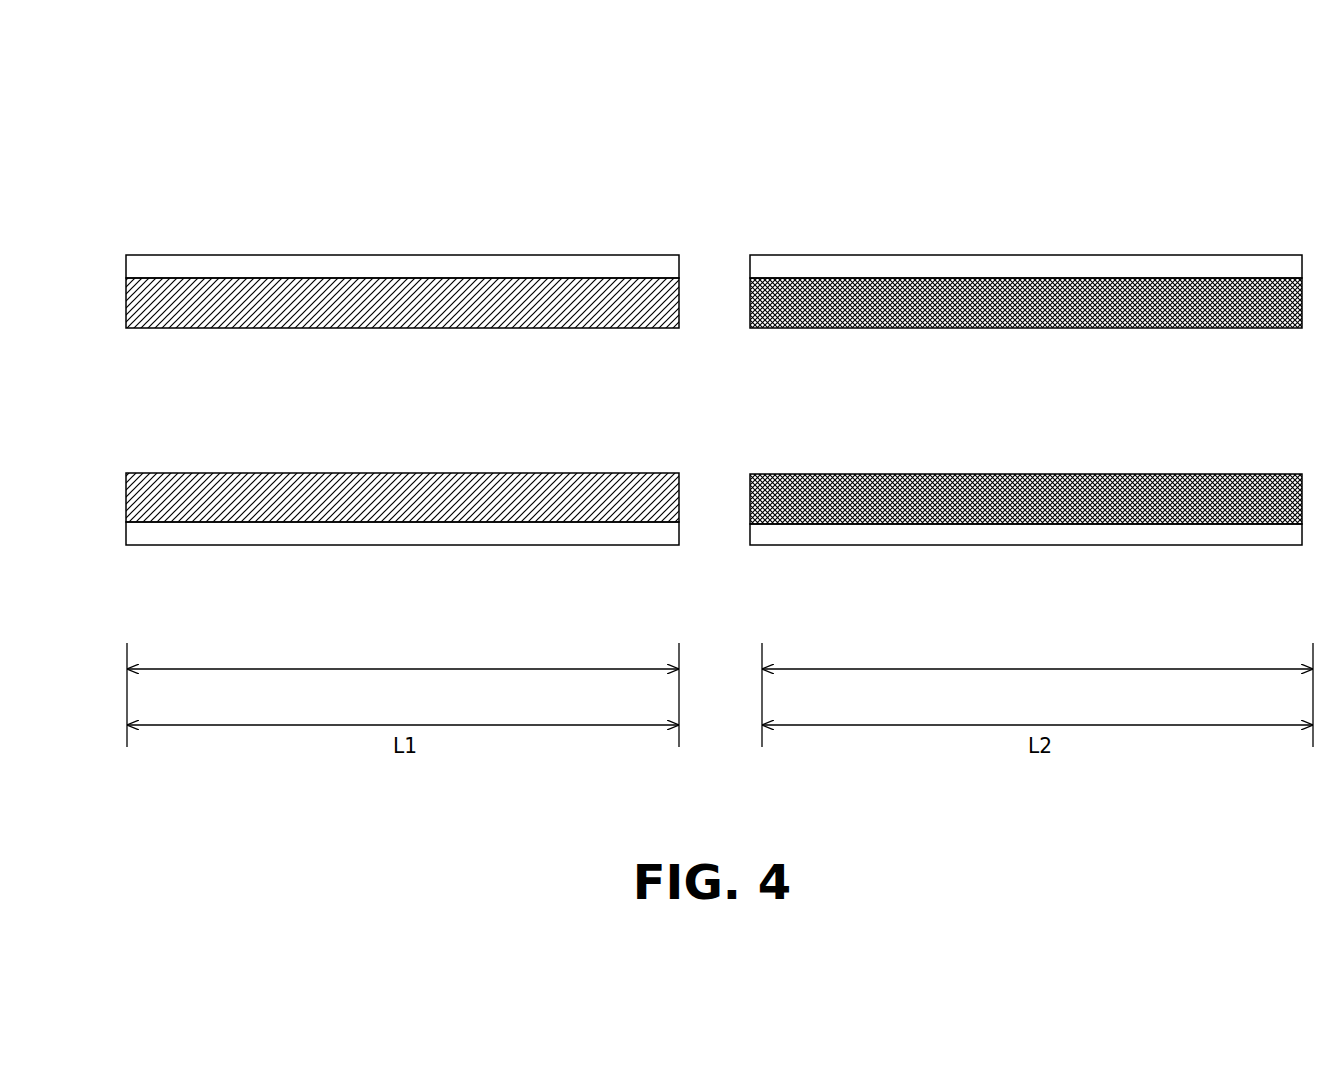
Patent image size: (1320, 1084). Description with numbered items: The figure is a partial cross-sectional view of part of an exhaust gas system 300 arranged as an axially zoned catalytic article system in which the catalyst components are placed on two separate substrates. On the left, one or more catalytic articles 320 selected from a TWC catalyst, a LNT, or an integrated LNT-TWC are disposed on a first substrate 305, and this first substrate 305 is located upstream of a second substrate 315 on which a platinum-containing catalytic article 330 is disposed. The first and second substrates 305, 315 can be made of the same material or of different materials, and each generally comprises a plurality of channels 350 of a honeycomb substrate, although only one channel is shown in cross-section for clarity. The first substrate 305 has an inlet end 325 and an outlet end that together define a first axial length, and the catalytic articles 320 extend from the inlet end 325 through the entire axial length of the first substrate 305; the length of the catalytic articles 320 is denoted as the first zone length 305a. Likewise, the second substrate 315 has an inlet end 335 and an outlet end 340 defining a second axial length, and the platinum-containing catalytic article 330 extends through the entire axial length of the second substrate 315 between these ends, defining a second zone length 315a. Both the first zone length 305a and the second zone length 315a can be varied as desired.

The exhaust gas system 300 is at (256, 166).
The first substrate 305 is at (187, 265).
The first zone length 305a is at (403, 695).
The second substrate 315 is at (1111, 265).
The second zone length 315a is at (1037, 695).
The catalytic articles 320 is at (368, 291).
The inlet end 325 is at (634, 353).
The platinum-containing catalytic article 330 is at (1003, 307).
The inlet end 335 is at (818, 397).
The outlet end 340 is at (1209, 400).
The channels 350 is at (731, 452).